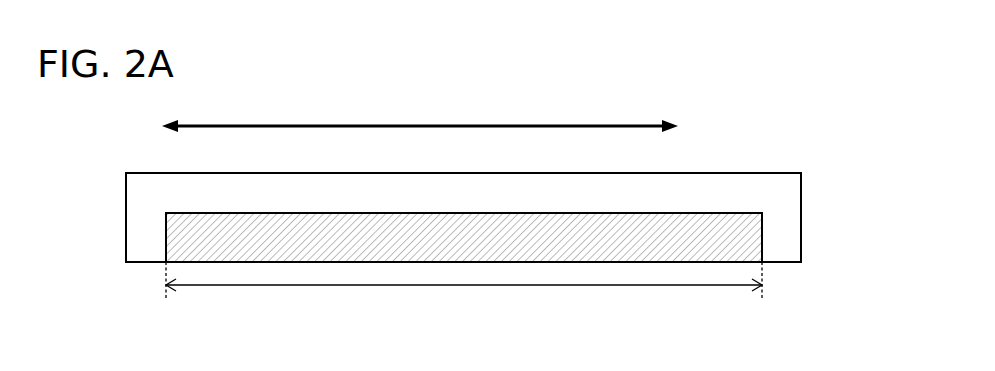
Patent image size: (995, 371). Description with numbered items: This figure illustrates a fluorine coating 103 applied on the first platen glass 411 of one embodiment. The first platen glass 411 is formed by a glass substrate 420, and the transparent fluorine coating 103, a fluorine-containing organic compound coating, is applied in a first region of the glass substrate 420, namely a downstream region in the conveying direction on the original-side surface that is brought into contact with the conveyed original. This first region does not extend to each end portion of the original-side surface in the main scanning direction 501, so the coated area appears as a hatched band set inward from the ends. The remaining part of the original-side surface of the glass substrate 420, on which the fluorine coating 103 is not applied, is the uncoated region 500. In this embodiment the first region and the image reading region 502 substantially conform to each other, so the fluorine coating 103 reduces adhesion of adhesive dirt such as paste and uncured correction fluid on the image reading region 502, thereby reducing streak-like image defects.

The fluorine coating 103 is at (180, 233).
The first platen glass 411 is at (793, 149).
The glass substrate 420 is at (698, 172).
The uncoated region 500 is at (785, 213).
The main scanning direction 501 is at (420, 115).
The image reading region 502 is at (464, 289).